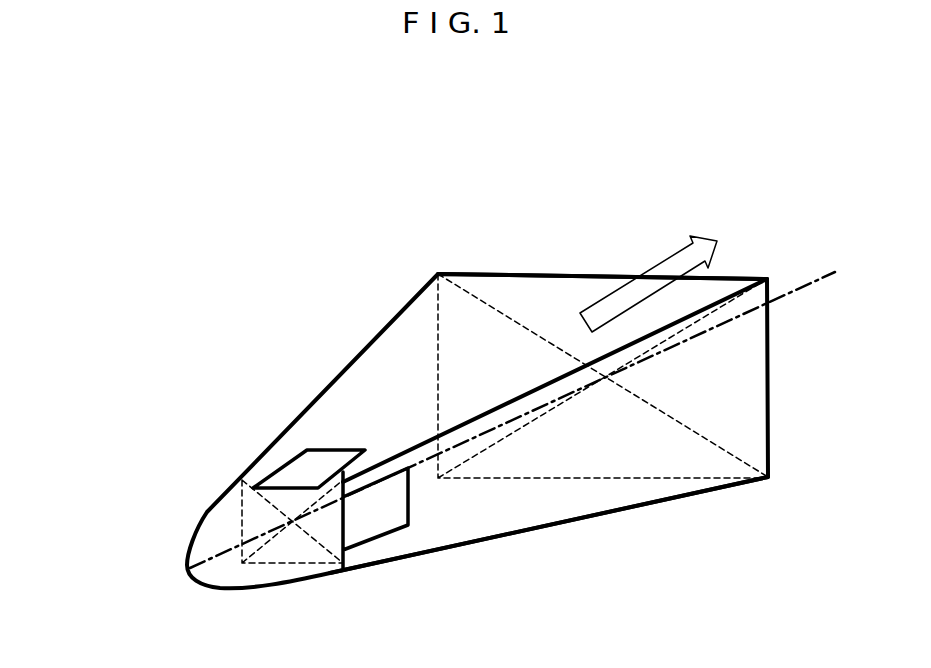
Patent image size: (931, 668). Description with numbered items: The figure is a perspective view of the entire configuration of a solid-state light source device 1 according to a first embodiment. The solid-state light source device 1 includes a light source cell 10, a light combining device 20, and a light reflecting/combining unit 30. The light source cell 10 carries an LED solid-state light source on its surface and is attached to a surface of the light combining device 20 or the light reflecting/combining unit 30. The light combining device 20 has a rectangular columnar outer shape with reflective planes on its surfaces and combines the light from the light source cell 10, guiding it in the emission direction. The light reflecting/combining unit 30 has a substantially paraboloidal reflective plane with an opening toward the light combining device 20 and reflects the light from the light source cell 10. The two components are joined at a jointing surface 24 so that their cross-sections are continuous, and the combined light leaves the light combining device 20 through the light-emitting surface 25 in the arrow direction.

The solid-state light source device 1 is at (432, 391).
The light source cell 10 is at (417, 602).
The light combining device 20 is at (375, 372).
The jointing surface 24 is at (338, 572).
The light-emitting surface 25 is at (577, 275).
The light reflecting/combining unit 30 is at (225, 532).